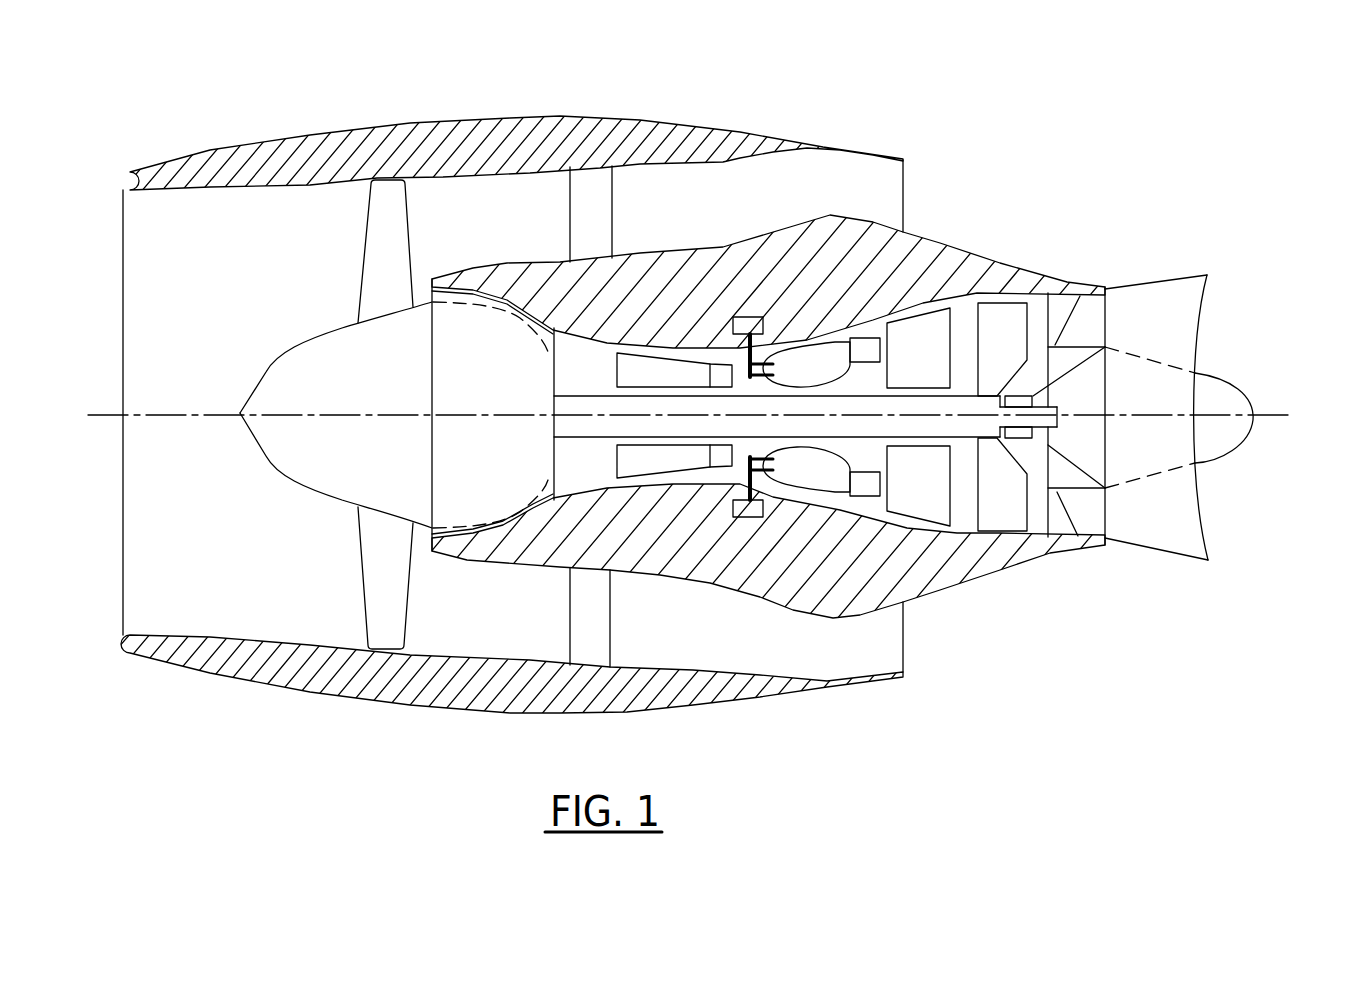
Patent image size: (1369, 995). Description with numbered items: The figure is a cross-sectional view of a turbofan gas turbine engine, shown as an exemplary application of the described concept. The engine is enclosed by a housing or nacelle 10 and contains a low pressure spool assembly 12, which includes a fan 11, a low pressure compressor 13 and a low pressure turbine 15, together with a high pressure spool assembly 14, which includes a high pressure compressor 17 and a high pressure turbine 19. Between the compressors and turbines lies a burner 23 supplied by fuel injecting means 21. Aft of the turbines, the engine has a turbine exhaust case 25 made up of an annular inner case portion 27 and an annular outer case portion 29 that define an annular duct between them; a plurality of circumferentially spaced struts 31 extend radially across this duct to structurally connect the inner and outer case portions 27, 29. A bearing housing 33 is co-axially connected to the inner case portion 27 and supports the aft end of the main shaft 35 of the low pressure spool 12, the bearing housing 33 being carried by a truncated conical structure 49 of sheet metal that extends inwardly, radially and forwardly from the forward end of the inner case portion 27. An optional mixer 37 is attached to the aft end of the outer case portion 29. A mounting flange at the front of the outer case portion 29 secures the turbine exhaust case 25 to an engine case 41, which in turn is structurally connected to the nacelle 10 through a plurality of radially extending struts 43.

The nacelle 10 is at (653, 120).
The fan 11 is at (365, 243).
The low pressure spool assembly 12 is at (963, 395).
The low pressure compressor 13 is at (472, 327).
The high pressure spool assembly 14 is at (710, 355).
The low pressure turbine 15 is at (1032, 323).
The high pressure compressor 17 is at (628, 367).
The high pressure turbine 19 is at (920, 313).
The fuel injecting means 21 is at (750, 315).
The burner 23 is at (815, 360).
The turbine exhaust case 25 is at (1100, 547).
The inner case portion 27 is at (1084, 343).
The outer case portion 29 is at (1062, 297).
The struts 31 is at (1087, 523).
The bearing housing 33 is at (1018, 436).
The main shaft 35 is at (963, 440).
The mixer 37 is at (1185, 543).
The engine case 41 is at (1005, 273).
The struts 43 is at (592, 182).
The truncated conical structure 49 is at (1083, 363).